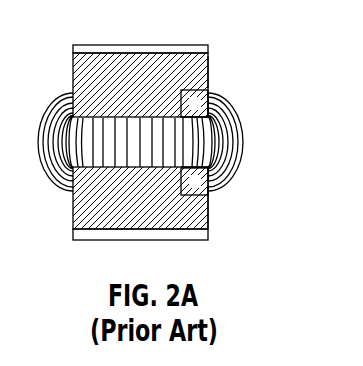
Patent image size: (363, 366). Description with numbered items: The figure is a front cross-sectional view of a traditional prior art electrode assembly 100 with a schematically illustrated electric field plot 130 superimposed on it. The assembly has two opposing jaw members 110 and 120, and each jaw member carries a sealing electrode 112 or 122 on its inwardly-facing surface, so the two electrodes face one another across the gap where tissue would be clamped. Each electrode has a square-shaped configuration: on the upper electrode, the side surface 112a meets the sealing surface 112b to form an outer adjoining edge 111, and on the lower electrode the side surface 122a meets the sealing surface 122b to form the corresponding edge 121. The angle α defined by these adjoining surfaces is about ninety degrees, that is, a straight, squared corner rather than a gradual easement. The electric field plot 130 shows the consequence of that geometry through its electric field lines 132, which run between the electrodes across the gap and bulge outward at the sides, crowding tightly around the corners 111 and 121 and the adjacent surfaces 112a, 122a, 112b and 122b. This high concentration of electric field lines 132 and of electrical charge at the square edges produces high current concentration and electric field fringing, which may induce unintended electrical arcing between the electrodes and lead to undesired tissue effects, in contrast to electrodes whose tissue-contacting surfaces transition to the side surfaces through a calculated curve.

The traditional electrode assembly 100 is at (167, 138).
The jaw member 110 is at (90, 45).
The sealing electrode 112 is at (85, 82).
The side surface 112a is at (211, 88).
The edge 111 is at (211, 99).
The sealing surface 112b is at (183, 118).
The electric field lines 132 is at (238, 121).
The electric field plot 130 is at (177, 142).
The sealing surface 122b is at (183, 167).
The edge 121 is at (210, 172).
The side surface 122a is at (211, 194).
The sealing electrode 122 is at (86, 212).
The jaw member 120 is at (88, 241).